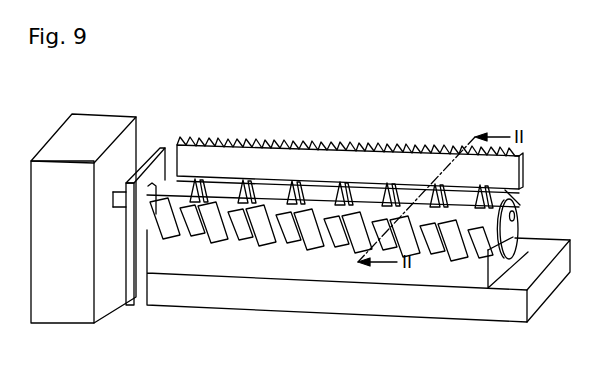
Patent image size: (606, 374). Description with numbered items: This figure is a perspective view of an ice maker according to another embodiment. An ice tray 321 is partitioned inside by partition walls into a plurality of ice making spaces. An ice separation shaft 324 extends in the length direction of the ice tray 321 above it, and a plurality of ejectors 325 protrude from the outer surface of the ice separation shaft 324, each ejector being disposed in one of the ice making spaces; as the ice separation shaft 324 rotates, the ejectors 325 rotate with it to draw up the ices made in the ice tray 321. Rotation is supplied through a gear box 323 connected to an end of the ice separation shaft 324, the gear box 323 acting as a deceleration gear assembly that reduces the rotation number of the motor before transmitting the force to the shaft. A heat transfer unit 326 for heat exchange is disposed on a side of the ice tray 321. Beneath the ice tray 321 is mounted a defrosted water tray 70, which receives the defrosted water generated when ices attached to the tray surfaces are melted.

The gear box 323 is at (100, 123).
The ice separation shaft 324 is at (223, 202).
The ejectors 325 is at (287, 203).
The heat transfer unit 326 is at (375, 170).
The ice tray 321 is at (522, 205).
The defrosted water tray 70 is at (368, 307).